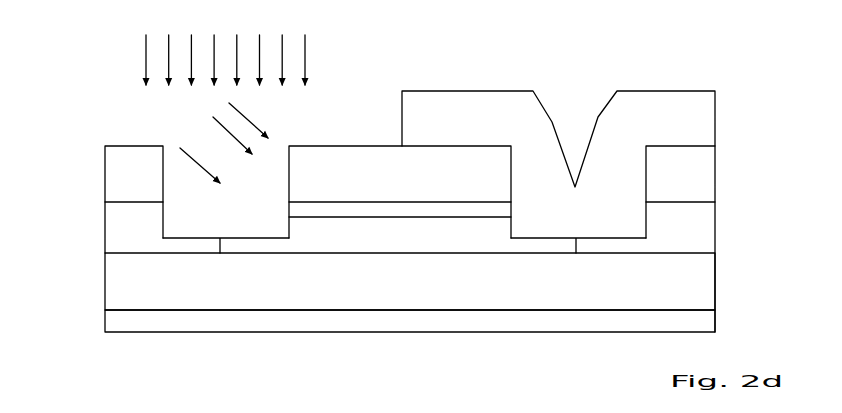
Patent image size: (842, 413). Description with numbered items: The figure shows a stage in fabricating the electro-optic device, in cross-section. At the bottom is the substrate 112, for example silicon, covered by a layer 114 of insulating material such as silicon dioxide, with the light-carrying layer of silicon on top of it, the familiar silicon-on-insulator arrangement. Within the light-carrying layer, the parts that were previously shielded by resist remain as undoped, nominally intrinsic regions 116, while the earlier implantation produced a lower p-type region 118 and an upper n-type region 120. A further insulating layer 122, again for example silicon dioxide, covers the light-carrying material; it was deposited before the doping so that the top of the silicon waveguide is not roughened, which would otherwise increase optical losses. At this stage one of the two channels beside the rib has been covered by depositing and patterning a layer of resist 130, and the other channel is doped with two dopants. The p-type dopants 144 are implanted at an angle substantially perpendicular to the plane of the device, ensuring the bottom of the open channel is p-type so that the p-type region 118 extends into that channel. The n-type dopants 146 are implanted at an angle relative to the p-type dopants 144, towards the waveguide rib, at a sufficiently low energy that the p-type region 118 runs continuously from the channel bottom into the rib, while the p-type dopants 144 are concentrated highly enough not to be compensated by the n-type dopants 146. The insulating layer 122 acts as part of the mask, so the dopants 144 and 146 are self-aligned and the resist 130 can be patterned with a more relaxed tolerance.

The substrate 112 is at (118, 323).
The layer of insulating material 114 is at (118, 287).
The undoped regions of the light-carrying layer 116 is at (127, 228).
The p-type region 118 is at (268, 248).
The n-type region 120 is at (442, 210).
The insulating layer 122 is at (137, 163).
The layer of resist 130 is at (622, 115).
The p-type dopants 144 is at (143, 55).
The n-type dopants 146 is at (199, 132).